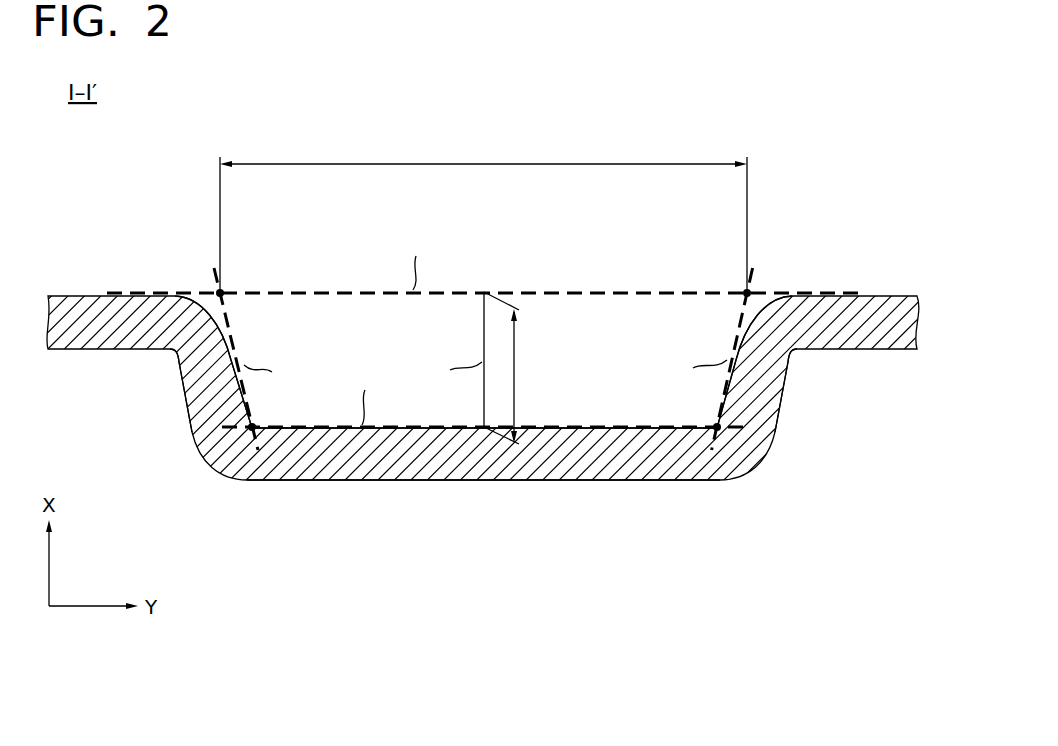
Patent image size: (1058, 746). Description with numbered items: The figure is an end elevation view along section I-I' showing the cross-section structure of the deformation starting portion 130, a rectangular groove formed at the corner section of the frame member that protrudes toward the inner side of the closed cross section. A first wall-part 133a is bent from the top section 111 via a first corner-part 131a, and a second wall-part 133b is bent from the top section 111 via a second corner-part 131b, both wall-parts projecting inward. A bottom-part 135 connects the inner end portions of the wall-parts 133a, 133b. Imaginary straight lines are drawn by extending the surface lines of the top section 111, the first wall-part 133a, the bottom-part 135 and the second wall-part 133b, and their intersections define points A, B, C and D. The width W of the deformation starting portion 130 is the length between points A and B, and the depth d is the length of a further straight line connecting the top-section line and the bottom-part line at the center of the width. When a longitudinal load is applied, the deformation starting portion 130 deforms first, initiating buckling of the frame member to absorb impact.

The top section 111 is at (80, 293).
The deformation starting portion 130 is at (339, 240).
The first corner-part 131a is at (190, 300).
The second corner-part 131b is at (773, 303).
The first wall-part 133a is at (205, 393).
The second wall-part 133b is at (765, 393).
The bottom-part 135 is at (557, 465).